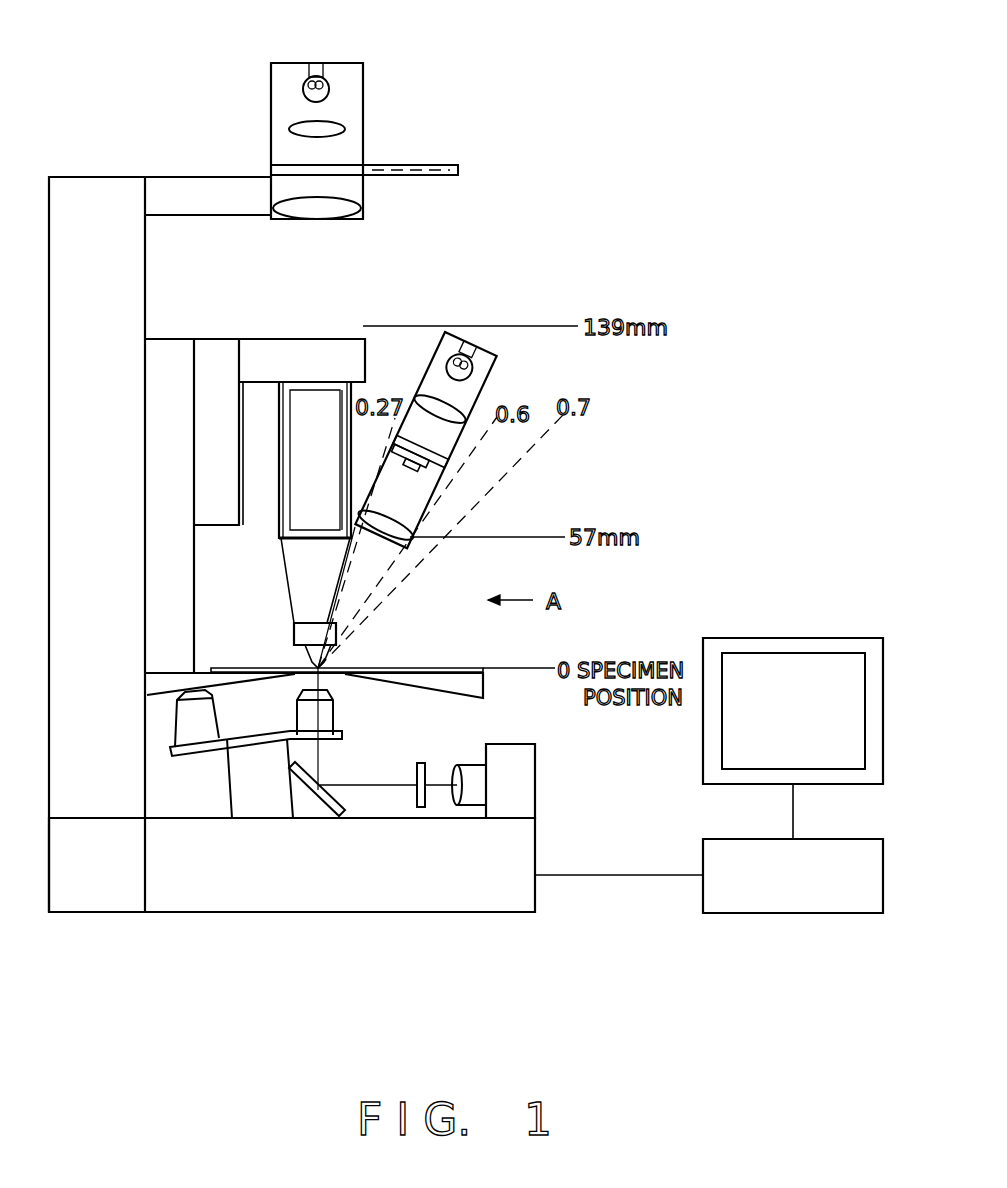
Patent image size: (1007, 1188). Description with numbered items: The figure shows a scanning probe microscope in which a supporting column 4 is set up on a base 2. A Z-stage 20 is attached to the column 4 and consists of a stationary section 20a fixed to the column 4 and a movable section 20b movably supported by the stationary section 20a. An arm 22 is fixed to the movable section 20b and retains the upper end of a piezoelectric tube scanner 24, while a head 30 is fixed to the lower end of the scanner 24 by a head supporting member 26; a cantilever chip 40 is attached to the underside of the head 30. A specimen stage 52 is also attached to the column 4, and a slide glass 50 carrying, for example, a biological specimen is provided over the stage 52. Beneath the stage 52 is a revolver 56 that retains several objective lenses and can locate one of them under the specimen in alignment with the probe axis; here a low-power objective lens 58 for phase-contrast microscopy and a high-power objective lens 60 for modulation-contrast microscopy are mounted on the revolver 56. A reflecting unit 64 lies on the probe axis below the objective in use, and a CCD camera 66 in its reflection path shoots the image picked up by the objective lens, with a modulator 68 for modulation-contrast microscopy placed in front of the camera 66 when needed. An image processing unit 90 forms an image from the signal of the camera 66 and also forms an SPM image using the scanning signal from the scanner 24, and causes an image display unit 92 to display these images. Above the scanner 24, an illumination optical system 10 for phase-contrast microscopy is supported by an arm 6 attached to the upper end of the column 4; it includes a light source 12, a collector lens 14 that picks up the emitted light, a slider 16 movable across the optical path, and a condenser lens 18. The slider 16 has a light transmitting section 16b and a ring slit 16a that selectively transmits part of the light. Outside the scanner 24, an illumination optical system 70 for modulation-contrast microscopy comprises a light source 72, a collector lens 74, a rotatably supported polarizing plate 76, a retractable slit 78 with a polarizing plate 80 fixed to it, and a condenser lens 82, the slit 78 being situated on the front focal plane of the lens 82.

The base 2 is at (536, 866).
The supporting column 4 is at (100, 183).
The arm 6 is at (166, 190).
The illumination optical system 10 is at (373, 123).
The light source 12 is at (344, 70).
The collector lens 14 is at (345, 128).
The slider 16 is at (458, 170).
The ring slit 16a is at (425, 162).
The light transmitting section 16b is at (287, 163).
The condenser lens 18 is at (363, 207).
The Z-stage 20 is at (255, 467).
The stationary section 20a is at (169, 338).
The movable section 20b is at (189, 334).
The arm 22 is at (256, 384).
The piezoelectric tube scanner 24 is at (280, 450).
The head supporting member 26 is at (286, 577).
The head 30 is at (293, 631).
The cantilever chip 40 is at (318, 668).
The slide glass 50 is at (407, 668).
The specimen stage 52 is at (483, 684).
The revolver 56 is at (254, 738).
The low-power objective lens 58 is at (333, 712).
The high-power objective lens 60 is at (194, 746).
The reflecting unit 64 is at (327, 812).
The CCD camera 66 is at (536, 770).
The modulator 68 is at (417, 772).
The illumination optical system 70 is at (441, 428).
The light source 72 is at (469, 364).
The collector lens 74 is at (460, 410).
The polarizing plate 76 is at (442, 457).
The retractable slit 78 is at (401, 456).
The polarizing plate 80 is at (434, 480).
The condenser lens 82 is at (398, 547).
The image processing unit 90 is at (741, 839).
The image display unit 92 is at (845, 786).